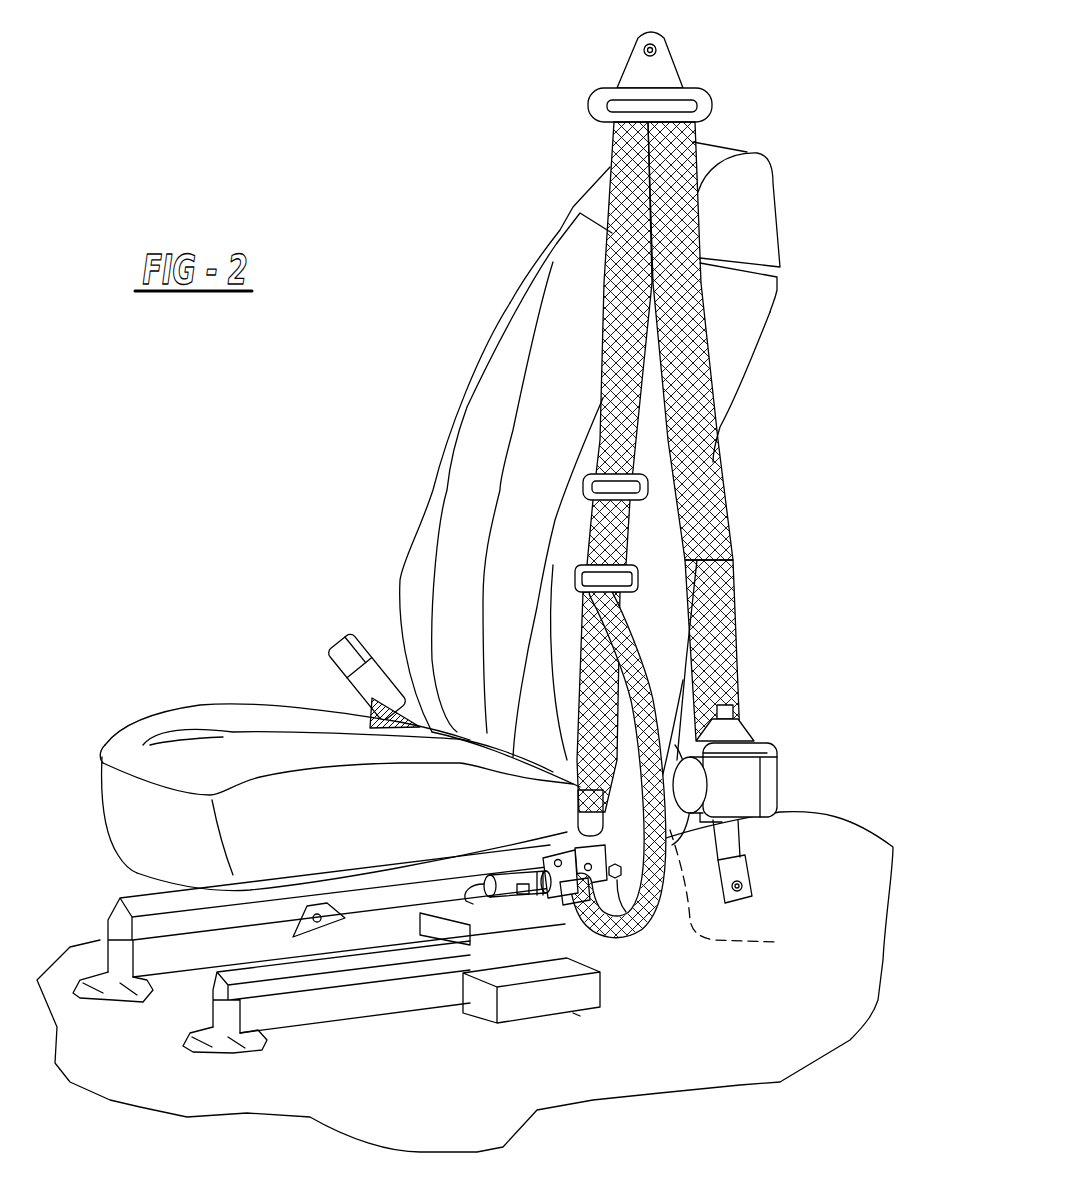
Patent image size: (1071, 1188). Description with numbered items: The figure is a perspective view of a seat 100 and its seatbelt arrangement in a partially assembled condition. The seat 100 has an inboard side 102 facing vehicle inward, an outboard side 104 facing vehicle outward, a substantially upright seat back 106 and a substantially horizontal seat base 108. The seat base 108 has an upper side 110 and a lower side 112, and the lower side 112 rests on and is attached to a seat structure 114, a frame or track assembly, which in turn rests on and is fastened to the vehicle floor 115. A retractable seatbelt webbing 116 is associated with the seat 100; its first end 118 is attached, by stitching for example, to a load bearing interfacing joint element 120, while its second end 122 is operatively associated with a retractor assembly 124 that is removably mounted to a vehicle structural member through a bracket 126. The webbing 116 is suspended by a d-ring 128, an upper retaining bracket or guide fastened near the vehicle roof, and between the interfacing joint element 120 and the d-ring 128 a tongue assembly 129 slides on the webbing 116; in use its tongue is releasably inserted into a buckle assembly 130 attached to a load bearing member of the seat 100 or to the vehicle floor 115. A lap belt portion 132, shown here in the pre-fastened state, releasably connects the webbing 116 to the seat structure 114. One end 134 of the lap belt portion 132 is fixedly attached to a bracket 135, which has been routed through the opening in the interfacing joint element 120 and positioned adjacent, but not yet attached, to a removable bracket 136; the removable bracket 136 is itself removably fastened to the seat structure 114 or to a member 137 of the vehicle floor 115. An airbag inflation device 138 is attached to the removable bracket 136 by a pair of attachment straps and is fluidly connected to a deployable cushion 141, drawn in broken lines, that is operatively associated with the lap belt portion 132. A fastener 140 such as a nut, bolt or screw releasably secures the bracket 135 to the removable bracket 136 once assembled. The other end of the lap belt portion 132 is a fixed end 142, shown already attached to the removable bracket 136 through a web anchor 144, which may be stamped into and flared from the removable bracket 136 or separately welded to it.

The seat 100 is at (413, 358).
The inboard side 102 is at (408, 563).
The outboard side 104 is at (660, 557).
The seat back 106 is at (510, 302).
The seat base 108 is at (207, 703).
The upper side 110 is at (127, 732).
The lower side 112 is at (167, 875).
The seat structure 114 is at (320, 950).
The vehicle floor 115 is at (854, 1011).
The retractable seatbelt webbing 116 is at (690, 353).
The first end 118 is at (607, 530).
The interfacing joint element 120 is at (573, 580).
The second end 122 is at (718, 681).
The retractor assembly 124 is at (747, 780).
The bracket 126 is at (742, 868).
The d-ring 128 is at (657, 50).
The tongue assembly 129 is at (583, 490).
The buckle assembly 130 is at (327, 680).
The lap belt portion 132 is at (595, 647).
The end 134 is at (580, 817).
The bracket 135 is at (573, 847).
The removable bracket 136 is at (483, 887).
The member 137 is at (573, 1013).
The airbag inflation device 138 is at (523, 892).
The fastener 140 is at (617, 889).
The deployable cushion 141 is at (733, 942).
The fixed end 142 is at (560, 880).
The web anchor 144 is at (573, 882).